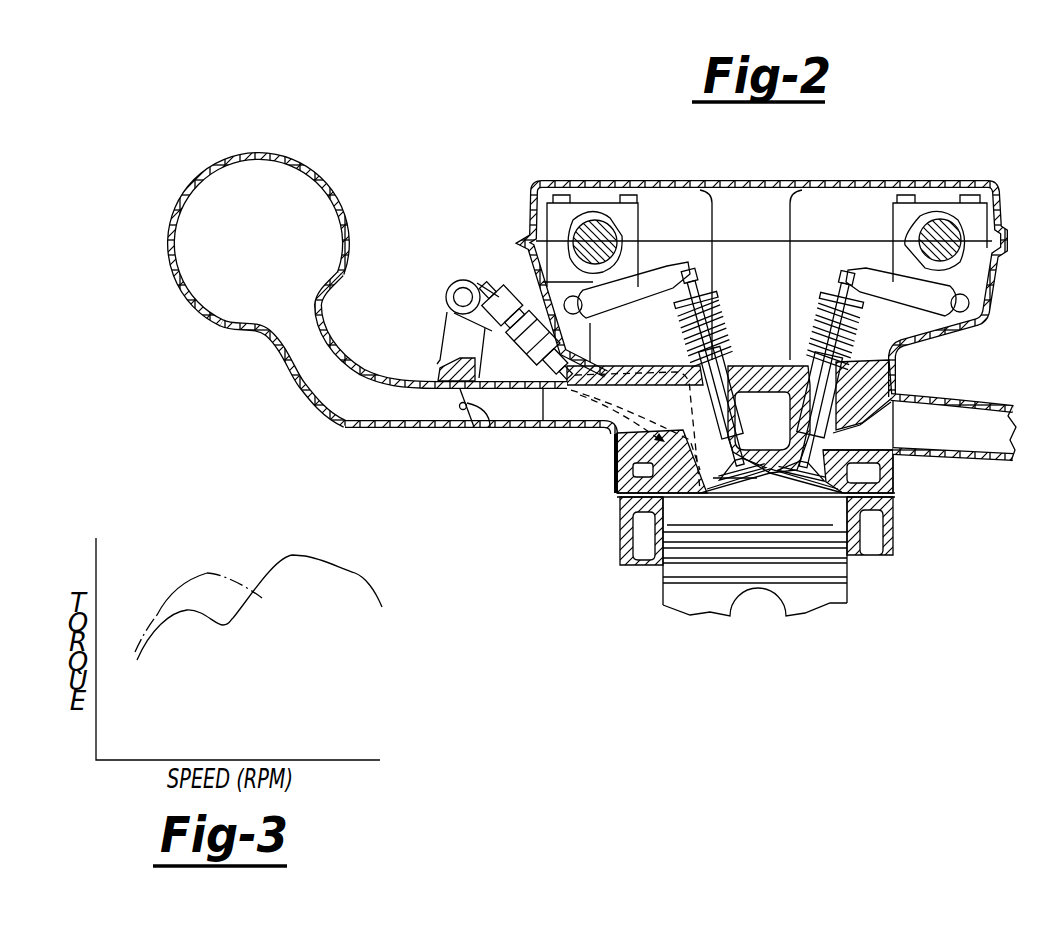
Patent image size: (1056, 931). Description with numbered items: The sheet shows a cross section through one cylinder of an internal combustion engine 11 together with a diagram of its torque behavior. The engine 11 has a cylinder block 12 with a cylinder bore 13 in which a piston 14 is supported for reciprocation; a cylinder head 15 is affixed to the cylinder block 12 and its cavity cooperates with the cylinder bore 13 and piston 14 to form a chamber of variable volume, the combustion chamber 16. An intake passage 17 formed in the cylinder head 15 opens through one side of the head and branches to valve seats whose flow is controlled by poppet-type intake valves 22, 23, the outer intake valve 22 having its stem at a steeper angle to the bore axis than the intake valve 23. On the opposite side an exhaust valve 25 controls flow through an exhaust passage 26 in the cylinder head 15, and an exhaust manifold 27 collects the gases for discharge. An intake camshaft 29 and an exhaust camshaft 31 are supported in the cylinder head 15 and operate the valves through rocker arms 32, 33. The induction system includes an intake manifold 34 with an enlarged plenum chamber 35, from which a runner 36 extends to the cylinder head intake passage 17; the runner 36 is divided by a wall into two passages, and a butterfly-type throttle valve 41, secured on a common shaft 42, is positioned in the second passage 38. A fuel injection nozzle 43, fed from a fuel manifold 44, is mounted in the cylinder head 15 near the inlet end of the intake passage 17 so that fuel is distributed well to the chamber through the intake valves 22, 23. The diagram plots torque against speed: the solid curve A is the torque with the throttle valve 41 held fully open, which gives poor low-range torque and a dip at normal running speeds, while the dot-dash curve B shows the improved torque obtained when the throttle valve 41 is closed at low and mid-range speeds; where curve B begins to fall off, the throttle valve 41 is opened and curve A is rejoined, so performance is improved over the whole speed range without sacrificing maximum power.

In FIG. 2, the internal combustion engine 11 is at (899, 153).
In FIG. 2, the cylinder block 12 is at (899, 528).
In FIG. 2, the cylinder bore 13 is at (838, 556).
In FIG. 2, the piston 14 is at (848, 588).
In FIG. 2, the cylinder head 15 is at (901, 481).
In FIG. 2, the combustion chamber 16 is at (768, 523).
In FIG. 2, the intake passage 17 is at (578, 425).
In FIG. 2, the intake valve 22 is at (724, 372).
In FIG. 2, the intake valve 23 is at (676, 496).
In FIG. 2, the exhaust valve 25 is at (820, 447).
In FIG. 2, the exhaust passage 26 is at (896, 398).
In FIG. 2, the exhaust manifold 27 is at (958, 433).
In FIG. 2, the intake camshaft 29 is at (632, 226).
In FIG. 2, the exhaust camshaft 31 is at (945, 212).
In FIG. 2, the rocker arm 32 is at (697, 277).
In FIG. 2, the rocker arm 33 is at (845, 270).
In FIG. 2, the intake manifold 34 is at (392, 312).
In FIG. 2, the plenum chamber 35 is at (334, 190).
In FIG. 2, the runner 36 is at (345, 429).
In FIG. 2, the second passage 38 is at (410, 418).
In FIG. 2, the throttle valve 41 is at (466, 430).
In FIG. 2, the common shaft 42 is at (473, 405).
In FIG. 2, the fuel injection nozzle 43 is at (530, 293).
In FIG. 2, the fuel manifold 44 is at (452, 280).
In FIG. 3, the torque curve A is at (233, 618).
In FIG. 3, the torque curve B is at (210, 575).